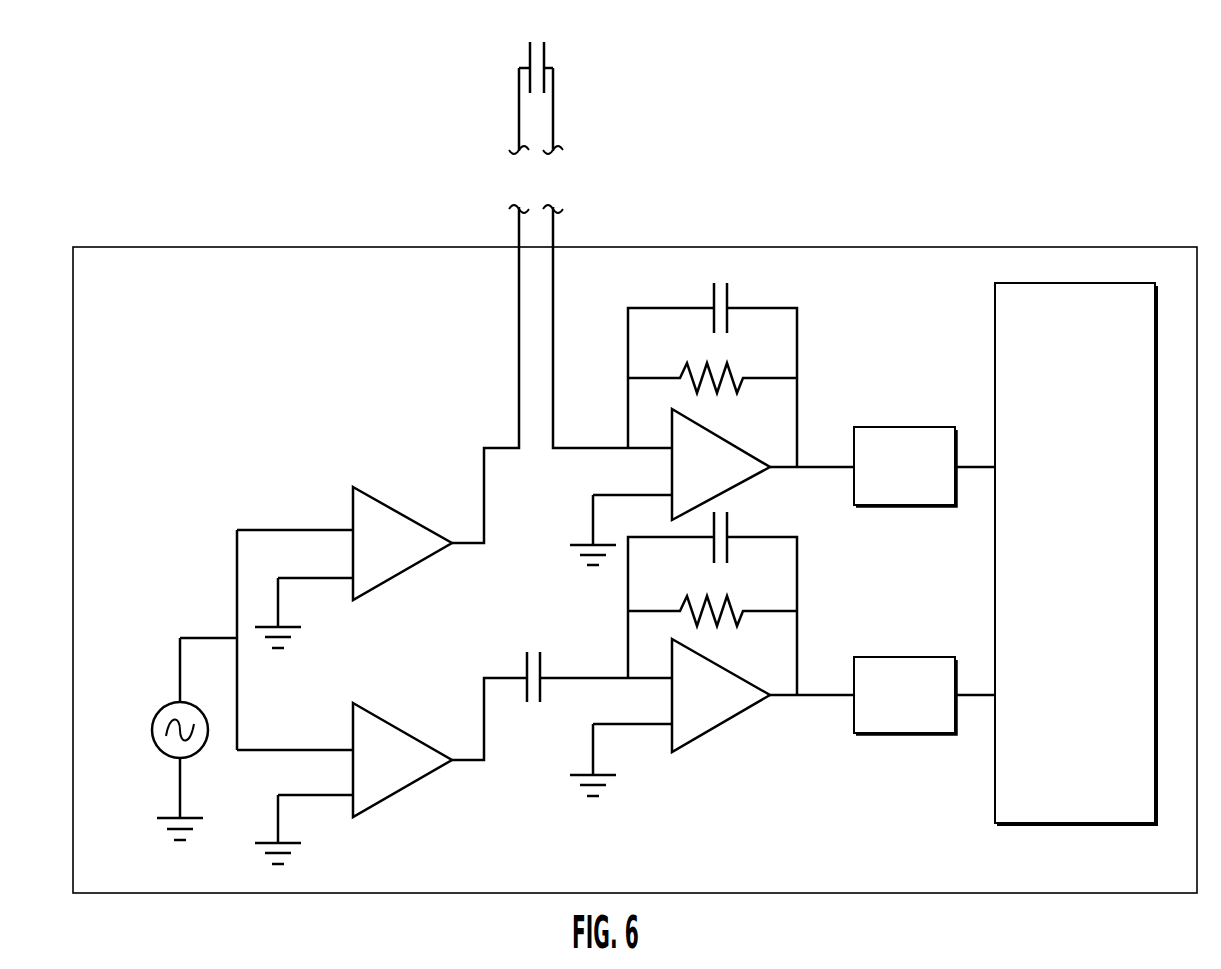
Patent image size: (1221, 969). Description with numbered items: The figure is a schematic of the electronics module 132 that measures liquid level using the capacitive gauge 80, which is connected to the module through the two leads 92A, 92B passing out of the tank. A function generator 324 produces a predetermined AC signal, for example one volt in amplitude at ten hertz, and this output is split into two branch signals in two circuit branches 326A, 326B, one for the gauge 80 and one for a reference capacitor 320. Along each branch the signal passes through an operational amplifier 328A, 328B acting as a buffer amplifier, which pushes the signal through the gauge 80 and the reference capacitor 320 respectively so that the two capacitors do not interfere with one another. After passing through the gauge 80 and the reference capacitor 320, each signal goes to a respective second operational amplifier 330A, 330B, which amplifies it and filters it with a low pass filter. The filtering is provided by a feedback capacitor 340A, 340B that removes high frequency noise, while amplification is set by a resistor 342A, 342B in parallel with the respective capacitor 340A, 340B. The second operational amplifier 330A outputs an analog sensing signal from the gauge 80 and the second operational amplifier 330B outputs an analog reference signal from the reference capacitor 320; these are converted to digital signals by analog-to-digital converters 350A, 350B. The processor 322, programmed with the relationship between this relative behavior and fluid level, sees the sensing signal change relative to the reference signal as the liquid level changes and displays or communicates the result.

The gauge 80 is at (560, 49).
The lead 92A is at (519, 107).
The lead 92B is at (553, 106).
The electronics module 132 is at (1058, 174).
The reference capacitor 320 is at (536, 734).
The processor 322 is at (1092, 565).
The function generator 324 is at (138, 722).
The circuit branch 326A is at (216, 598).
The circuit branch 326B is at (284, 742).
The operational amplifier 328A is at (411, 559).
The operational amplifier 328B is at (411, 776).
The second operational amplifier 330A is at (731, 484).
The second operational amplifier 330B is at (731, 712).
The capacitor 340A is at (744, 289).
The capacitor 340B is at (771, 517).
The resistor 342A is at (751, 392).
The resistor 342B is at (752, 621).
The analog-to-digital converter 350A is at (928, 481).
The analog-to-digital converter 350B is at (928, 709).